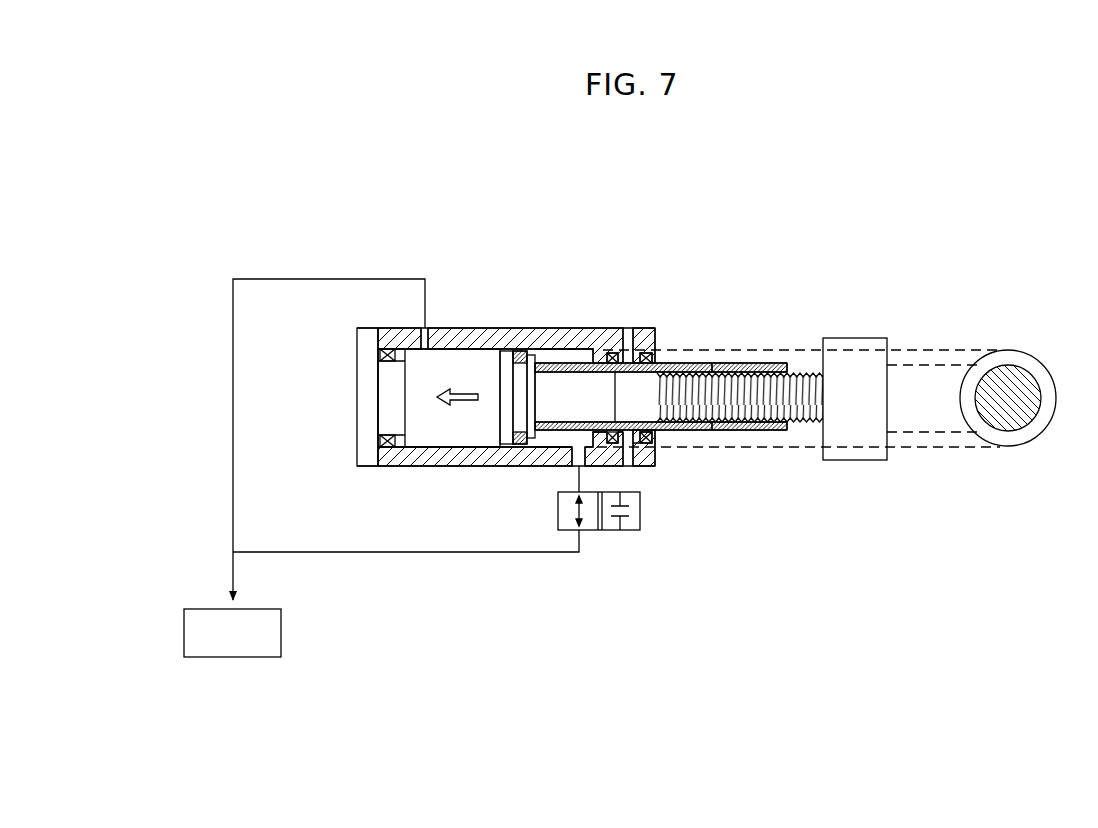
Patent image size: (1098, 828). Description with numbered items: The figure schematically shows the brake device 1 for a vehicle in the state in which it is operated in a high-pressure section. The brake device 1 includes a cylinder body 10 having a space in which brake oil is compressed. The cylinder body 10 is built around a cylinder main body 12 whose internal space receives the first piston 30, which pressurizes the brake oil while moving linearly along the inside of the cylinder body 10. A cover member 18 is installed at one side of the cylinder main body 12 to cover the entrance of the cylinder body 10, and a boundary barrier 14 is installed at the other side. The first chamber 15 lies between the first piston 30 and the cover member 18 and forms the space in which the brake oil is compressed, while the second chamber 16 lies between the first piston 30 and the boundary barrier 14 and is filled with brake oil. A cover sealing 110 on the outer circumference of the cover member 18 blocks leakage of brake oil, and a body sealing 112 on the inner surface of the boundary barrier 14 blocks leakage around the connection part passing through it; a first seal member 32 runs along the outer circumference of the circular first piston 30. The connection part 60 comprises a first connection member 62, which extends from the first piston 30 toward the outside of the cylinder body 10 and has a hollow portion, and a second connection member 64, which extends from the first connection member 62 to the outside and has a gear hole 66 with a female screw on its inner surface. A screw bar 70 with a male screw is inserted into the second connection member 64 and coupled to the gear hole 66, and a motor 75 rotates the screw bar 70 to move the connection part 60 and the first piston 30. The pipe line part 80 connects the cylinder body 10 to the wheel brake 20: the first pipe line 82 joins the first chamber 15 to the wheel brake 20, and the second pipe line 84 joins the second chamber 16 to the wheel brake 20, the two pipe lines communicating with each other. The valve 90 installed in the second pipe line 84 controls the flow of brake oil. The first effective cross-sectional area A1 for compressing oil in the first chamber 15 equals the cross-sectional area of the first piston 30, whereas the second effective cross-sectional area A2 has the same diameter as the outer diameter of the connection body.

The brake device 1 is at (836, 226).
The cylinder body 10 is at (585, 325).
The cylinder main body 12 is at (495, 336).
The boundary barrier 14 is at (655, 463).
The first chamber 15 is at (456, 354).
The second chamber 16 is at (566, 357).
The cover member 18 is at (366, 367).
The wheel brake 20 is at (283, 627).
The first piston 30 is at (497, 425).
The first seal member 32 is at (520, 442).
The connection part 60 is at (681, 362).
The first connection member 62 is at (712, 364).
The second connection member 64 is at (766, 364).
The gear hole 66 is at (797, 365).
The screw bar 70 is at (798, 426).
The motor 75 is at (887, 358).
The pipe line part 80 is at (457, 582).
The first pipe line 82 is at (233, 388).
The second pipe line 84 is at (534, 553).
The valve 90 is at (647, 524).
The cover sealing 110 is at (390, 349).
The body sealing 112 is at (645, 352).
The first effective cross-sectional area A1 is at (1020, 352).
The second effective cross-sectional area A2 is at (1018, 380).